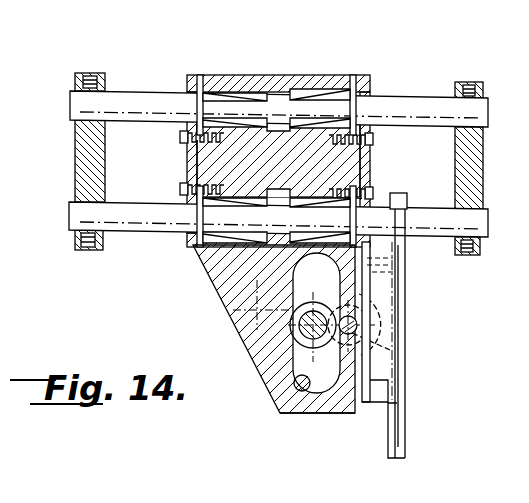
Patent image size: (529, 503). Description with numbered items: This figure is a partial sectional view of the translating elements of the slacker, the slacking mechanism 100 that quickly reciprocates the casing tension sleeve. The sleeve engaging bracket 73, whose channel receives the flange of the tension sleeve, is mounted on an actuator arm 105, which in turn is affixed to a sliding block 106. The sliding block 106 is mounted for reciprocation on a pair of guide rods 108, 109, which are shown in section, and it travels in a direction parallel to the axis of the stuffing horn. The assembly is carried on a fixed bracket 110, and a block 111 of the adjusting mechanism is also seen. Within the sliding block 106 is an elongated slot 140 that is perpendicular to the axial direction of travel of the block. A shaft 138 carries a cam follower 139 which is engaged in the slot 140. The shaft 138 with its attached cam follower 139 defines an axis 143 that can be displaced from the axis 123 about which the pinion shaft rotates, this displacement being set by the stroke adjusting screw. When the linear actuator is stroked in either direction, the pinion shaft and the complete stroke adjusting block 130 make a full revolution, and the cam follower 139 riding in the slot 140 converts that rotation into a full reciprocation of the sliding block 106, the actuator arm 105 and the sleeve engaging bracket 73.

The slacking mechanism 100 is at (297, 242).
The sleeve engaging bracket 73 is at (404, 428).
The actuator arm 105 is at (390, 382).
The sliding block 106 is at (324, 415).
The guide rod 108 is at (158, 232).
The guide rod 109 is at (128, 97).
The fixed bracket 110 is at (285, 243).
The block 111 is at (296, 76).
The axis of rotation 123 is at (401, 351).
The stroke adjusting block 130 is at (393, 300).
The shaft 138 is at (262, 312).
The cam follower 139 is at (275, 374).
The elongated slot 140 is at (283, 405).
The axis 143 is at (293, 340).